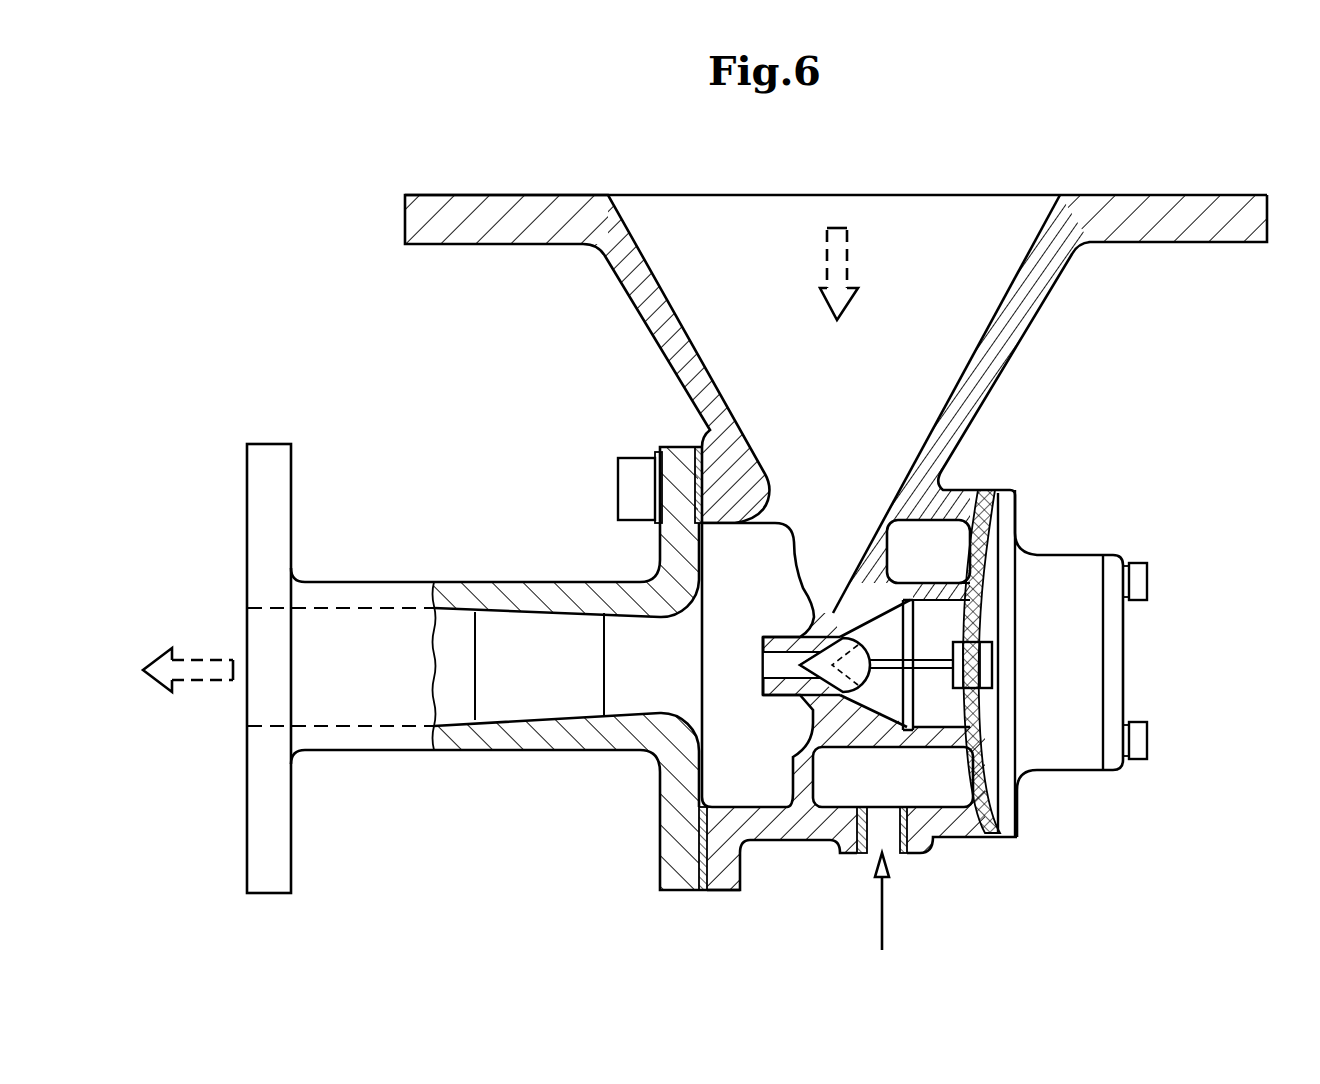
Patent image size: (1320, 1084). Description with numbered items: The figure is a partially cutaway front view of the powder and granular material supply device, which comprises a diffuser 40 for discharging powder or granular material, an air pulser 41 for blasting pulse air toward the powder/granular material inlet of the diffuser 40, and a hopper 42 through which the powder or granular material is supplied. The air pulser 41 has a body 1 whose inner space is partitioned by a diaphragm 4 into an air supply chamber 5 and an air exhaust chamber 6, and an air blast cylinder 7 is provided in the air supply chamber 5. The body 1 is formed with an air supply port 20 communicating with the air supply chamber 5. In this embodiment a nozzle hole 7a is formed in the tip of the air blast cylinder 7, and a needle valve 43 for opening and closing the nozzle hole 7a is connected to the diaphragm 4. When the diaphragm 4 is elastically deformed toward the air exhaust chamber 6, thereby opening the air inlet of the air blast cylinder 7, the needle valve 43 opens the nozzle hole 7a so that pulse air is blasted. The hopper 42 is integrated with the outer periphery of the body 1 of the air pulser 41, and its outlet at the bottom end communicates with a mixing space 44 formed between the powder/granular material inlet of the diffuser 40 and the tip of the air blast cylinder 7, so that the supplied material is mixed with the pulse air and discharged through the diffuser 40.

The body 1 is at (770, 830).
The diaphragm 4 is at (995, 520).
The air supply chamber 5 is at (955, 788).
The air exhaust chamber 6 is at (990, 563).
The air blast cylinder 7 is at (938, 742).
The nozzle hole 7a is at (780, 658).
The air supply port 20 is at (870, 823).
The diffuser 40 is at (390, 582).
The air pulser 41 is at (963, 488).
The hopper 42 is at (638, 282).
The needle valve 43 is at (803, 717).
The mixing space 44 is at (720, 667).